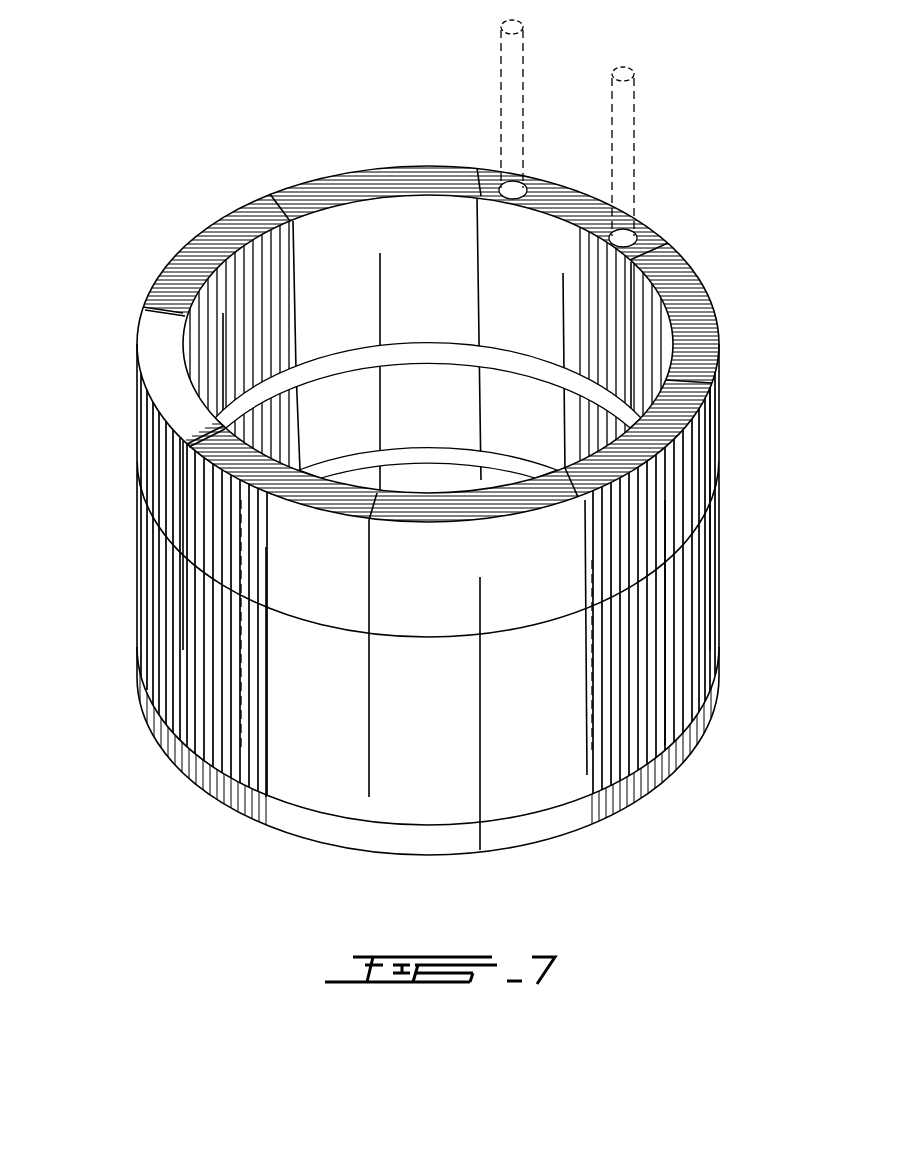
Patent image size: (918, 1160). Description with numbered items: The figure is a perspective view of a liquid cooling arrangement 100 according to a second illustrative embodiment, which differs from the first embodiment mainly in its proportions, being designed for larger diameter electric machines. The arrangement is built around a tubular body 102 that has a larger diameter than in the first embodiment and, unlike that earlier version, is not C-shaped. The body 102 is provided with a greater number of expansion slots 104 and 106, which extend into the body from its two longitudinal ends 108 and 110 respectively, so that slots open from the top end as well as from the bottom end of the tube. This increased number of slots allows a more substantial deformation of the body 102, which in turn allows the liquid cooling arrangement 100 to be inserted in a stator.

The liquid cooling arrangement 100 is at (175, 186).
The tubular body 102 is at (698, 301).
The expansion slots 104 is at (283, 200).
The expansion slots 106 is at (480, 850).
The longitudinal end 108 is at (407, 168).
The longitudinal end 110 is at (598, 824).